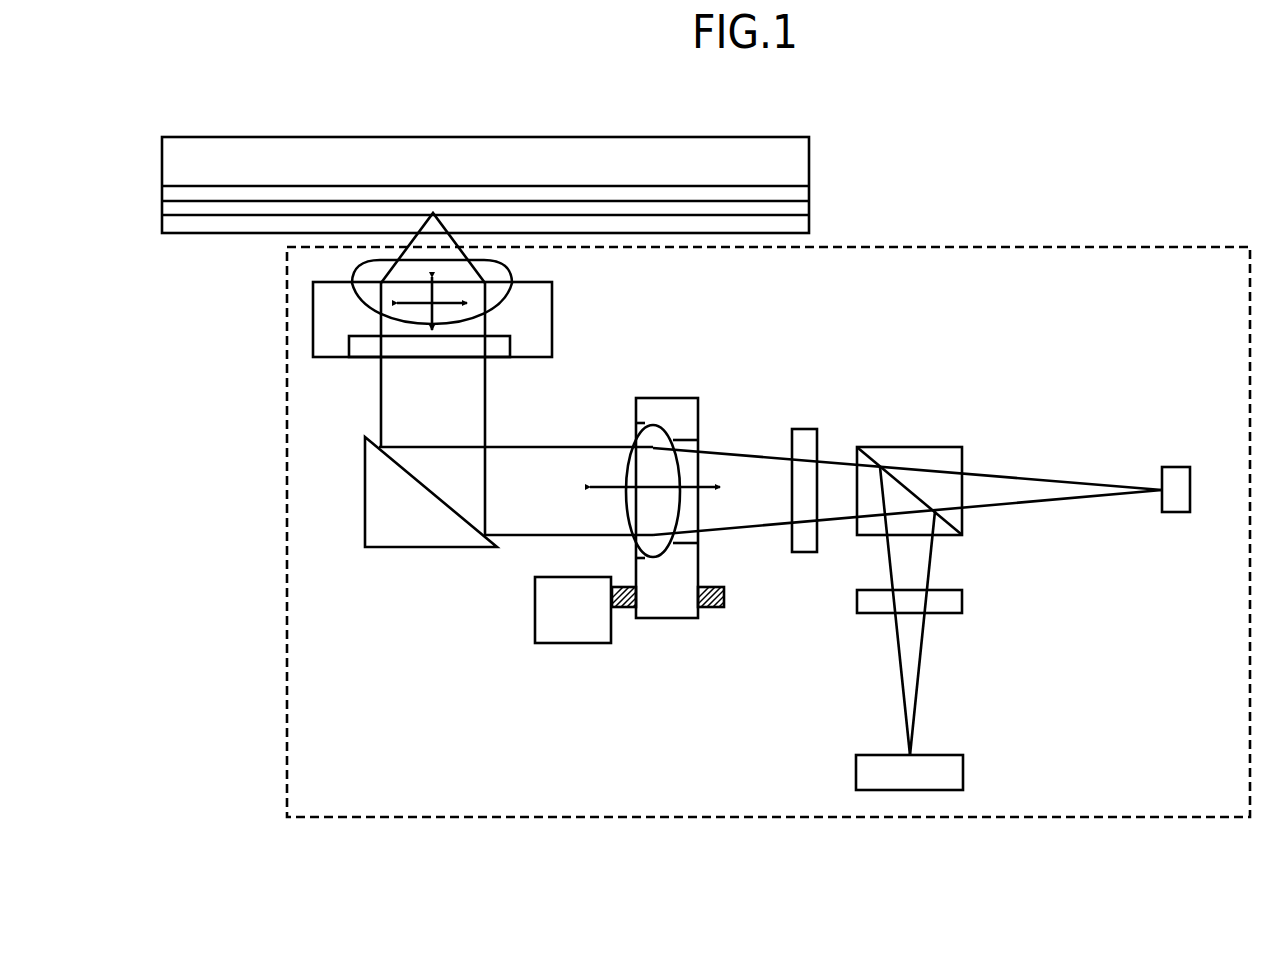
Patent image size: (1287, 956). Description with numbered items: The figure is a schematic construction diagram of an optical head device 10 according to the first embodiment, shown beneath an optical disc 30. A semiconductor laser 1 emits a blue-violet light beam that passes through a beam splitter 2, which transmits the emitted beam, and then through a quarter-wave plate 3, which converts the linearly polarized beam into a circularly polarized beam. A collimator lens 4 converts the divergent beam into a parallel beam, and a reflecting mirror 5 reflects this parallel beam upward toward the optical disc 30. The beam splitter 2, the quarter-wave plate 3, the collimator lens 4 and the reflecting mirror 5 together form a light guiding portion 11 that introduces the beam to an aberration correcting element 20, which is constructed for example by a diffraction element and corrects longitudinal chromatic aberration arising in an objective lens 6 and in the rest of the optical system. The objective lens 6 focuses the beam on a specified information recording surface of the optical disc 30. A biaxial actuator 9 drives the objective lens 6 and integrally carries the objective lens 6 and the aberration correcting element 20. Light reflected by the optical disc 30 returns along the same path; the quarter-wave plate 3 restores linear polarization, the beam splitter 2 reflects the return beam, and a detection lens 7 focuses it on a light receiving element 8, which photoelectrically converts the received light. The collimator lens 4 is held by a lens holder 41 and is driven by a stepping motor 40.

The semiconductor laser 1 is at (1175, 513).
The beam splitter 2 is at (937, 446).
The quarter-wave plate 3 is at (818, 432).
The collimator lens 4 is at (663, 437).
The reflecting mirror 5 is at (418, 549).
The objective lens 6 is at (362, 297).
The detection lens 7 is at (963, 598).
The light receiving element 8 is at (963, 755).
The biaxial actuator 9 is at (552, 317).
The optical head device 10 is at (980, 248).
The light guiding portion 11 is at (747, 690).
The aberration correcting element 20 is at (365, 357).
The optical disc 30 is at (810, 163).
The stepping motor 40 is at (550, 630).
The lens holder 41 is at (673, 610).